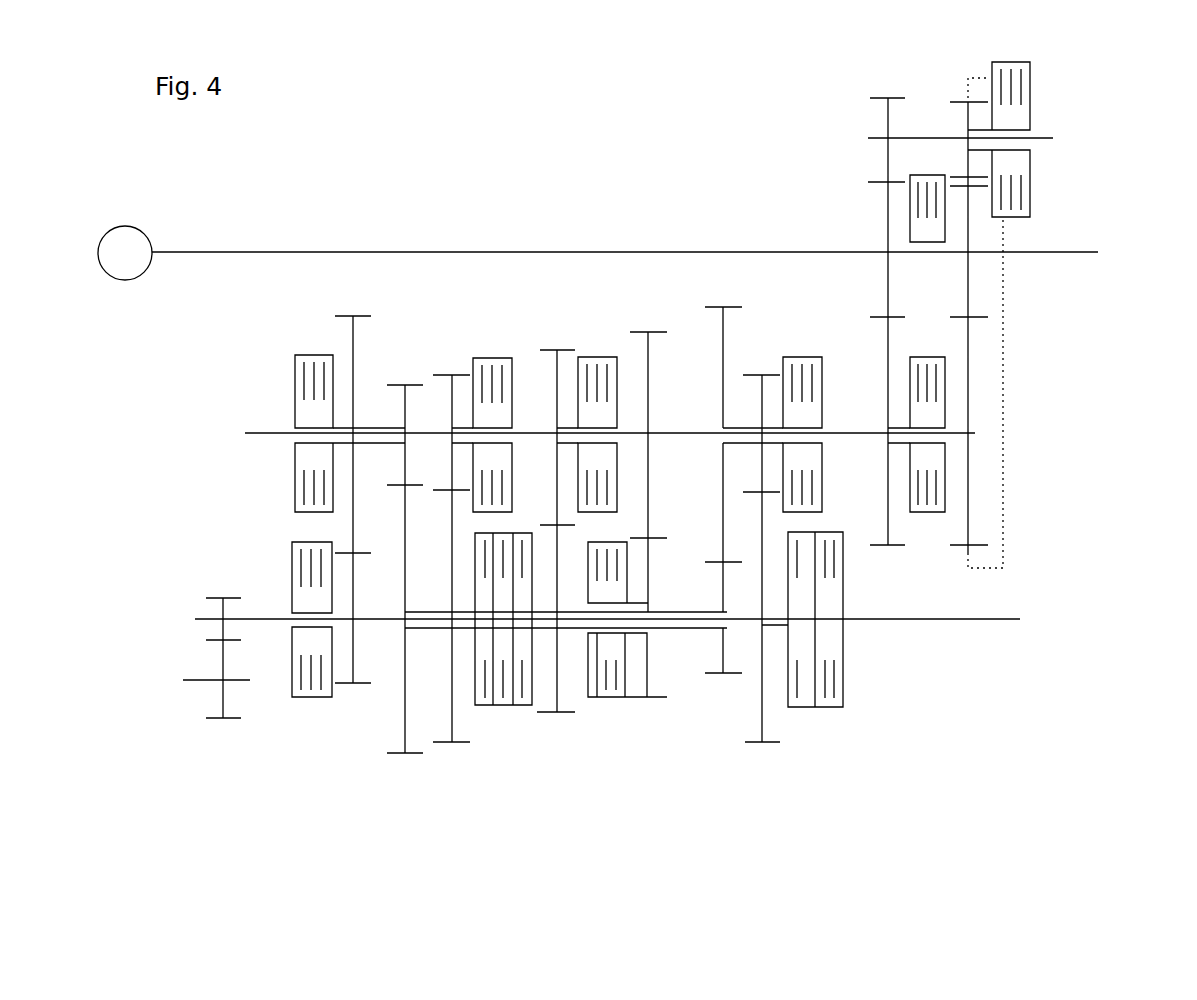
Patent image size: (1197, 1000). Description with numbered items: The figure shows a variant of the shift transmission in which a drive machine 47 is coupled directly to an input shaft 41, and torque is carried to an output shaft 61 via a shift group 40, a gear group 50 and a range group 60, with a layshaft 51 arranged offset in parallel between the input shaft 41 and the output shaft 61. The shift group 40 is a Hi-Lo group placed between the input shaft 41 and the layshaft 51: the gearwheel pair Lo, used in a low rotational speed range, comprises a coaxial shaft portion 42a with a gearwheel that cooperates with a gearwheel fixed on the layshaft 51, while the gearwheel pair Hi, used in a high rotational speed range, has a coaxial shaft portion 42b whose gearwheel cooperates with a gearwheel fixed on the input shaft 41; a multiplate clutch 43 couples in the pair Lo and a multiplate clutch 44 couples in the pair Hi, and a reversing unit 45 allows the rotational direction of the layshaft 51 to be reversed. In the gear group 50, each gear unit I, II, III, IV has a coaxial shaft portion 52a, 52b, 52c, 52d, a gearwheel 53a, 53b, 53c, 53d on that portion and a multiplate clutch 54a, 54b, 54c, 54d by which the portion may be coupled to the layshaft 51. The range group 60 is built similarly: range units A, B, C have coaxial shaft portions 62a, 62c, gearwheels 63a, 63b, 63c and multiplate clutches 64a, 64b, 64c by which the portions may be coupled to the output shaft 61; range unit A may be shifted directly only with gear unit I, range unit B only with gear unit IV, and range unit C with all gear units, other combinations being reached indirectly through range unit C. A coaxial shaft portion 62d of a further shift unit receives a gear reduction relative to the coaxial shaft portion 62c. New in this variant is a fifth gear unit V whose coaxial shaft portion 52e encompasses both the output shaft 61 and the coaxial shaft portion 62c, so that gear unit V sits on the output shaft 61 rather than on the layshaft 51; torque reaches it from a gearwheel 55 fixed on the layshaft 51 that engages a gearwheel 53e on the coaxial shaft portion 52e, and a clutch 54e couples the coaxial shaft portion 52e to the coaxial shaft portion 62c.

The shift group 40 is at (1078, 320).
The input shaft 41 is at (333, 250).
The coaxial shaft portion 42a is at (950, 242).
The coaxial shaft portion 42b is at (925, 425).
The clutch 43 is at (918, 175).
The clutch 44 is at (933, 513).
The reversing unit 45 is at (1065, 98).
The drive machine 47 is at (120, 228).
The gear group 50 is at (265, 472).
The layshaft 51 is at (255, 430).
The coaxial shaft portion 52a is at (365, 428).
The coaxial shaft portion 52b is at (470, 362).
The coaxial shaft portion 52c is at (572, 425).
The coaxial shaft portion 52d is at (733, 425).
The coaxial shaft portion 52e is at (630, 597).
The gearwheel 53a is at (352, 316).
The gearwheel 53b is at (447, 375).
The gearwheel 53c is at (558, 377).
The gearwheel 53d is at (723, 307).
The gearwheel 53e is at (647, 700).
The clutch 54a is at (305, 355).
The clutch 54b is at (487, 358).
The clutch 54c is at (600, 358).
The clutch 54d is at (800, 357).
The clutch 54e is at (590, 700).
The gearwheel 55 is at (648, 332).
The range group 60 is at (225, 577).
The output shaft 61 is at (930, 620).
The coaxial shaft portion 62a is at (392, 622).
The coaxial shaft portion 62c is at (517, 695).
The coaxial shaft portion 62d is at (795, 613).
The gearwheel 63a is at (340, 688).
The gearwheel 63b is at (770, 750).
The gearwheel 63c is at (448, 745).
The multiplate clutch 64a is at (302, 697).
The multiplate clutch 64b is at (830, 707).
The multiplate clutch 64c is at (520, 708).
The gear unit I is at (285, 372).
The gear unit II is at (465, 336).
The gear unit III is at (552, 288).
The gear unit IV is at (796, 287).
The gear unit V is at (659, 452).
The range unit A is at (282, 550).
The range unit B is at (880, 672).
The range unit C is at (436, 803).
The gearwheel pair Lo is at (932, 155).
The gearwheel pair Hi is at (938, 555).